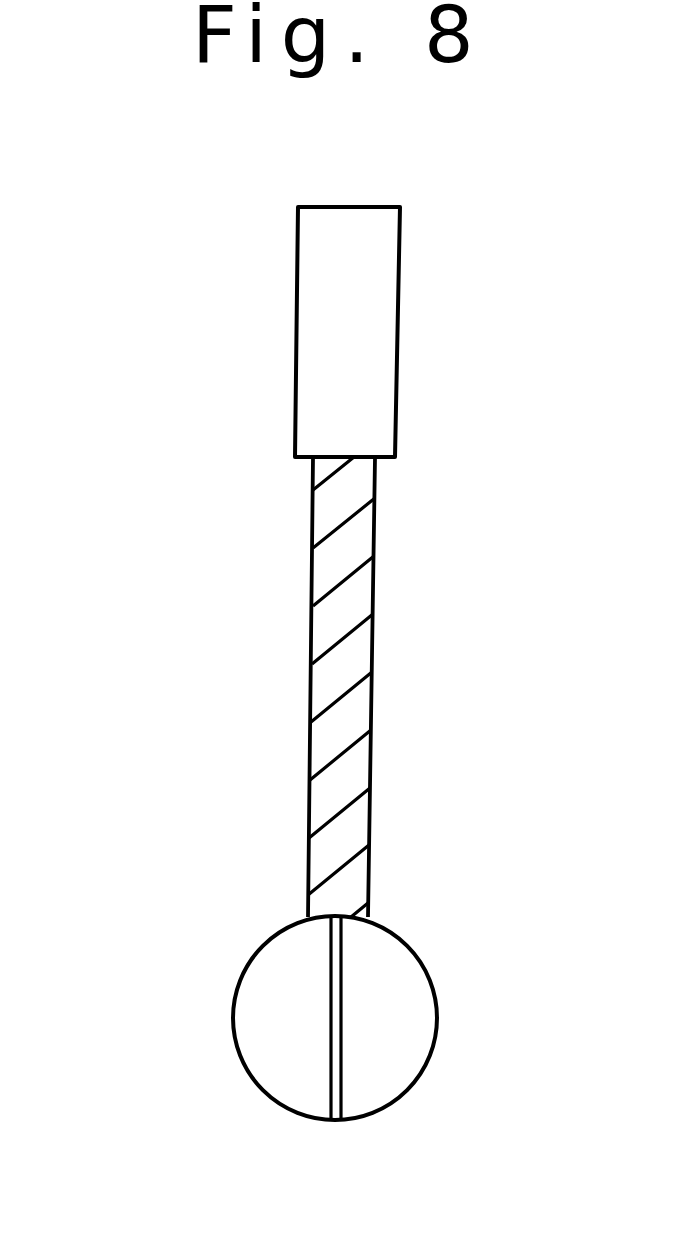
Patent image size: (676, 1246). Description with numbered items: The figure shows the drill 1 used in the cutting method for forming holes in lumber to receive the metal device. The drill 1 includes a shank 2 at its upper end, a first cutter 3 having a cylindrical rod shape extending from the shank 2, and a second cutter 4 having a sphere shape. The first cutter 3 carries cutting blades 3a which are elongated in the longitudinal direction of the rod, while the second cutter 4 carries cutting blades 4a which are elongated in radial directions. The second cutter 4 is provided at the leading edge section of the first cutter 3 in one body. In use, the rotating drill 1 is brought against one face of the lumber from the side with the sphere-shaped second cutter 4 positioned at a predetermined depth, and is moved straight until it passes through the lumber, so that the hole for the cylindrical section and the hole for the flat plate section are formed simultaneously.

The drill 1 is at (293, 568).
The shank 2 is at (385, 325).
The first cutter 3 is at (329, 687).
The cutting blades 3a is at (322, 743).
The second cutter 4 is at (315, 1018).
The cutting blades 4a is at (330, 1025).